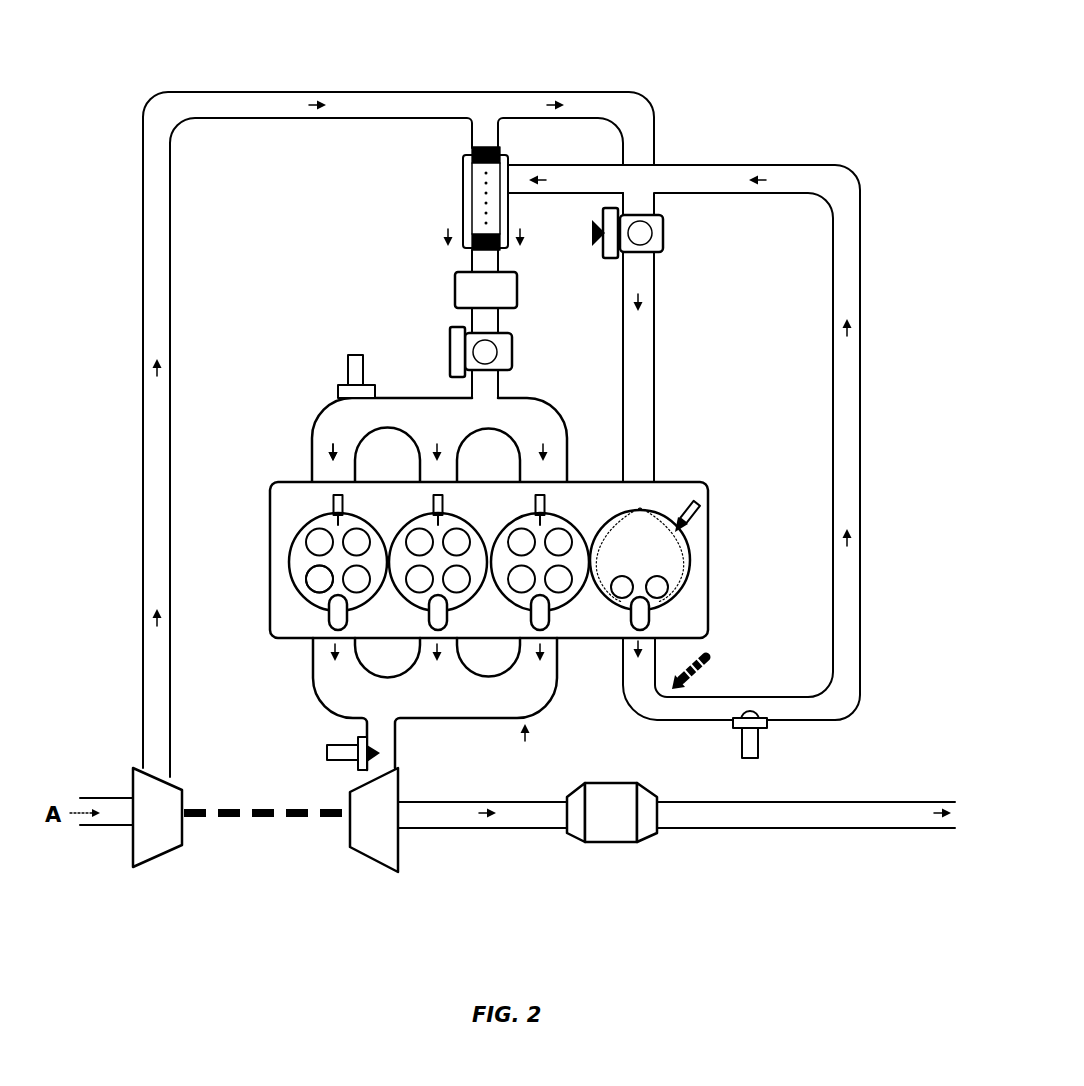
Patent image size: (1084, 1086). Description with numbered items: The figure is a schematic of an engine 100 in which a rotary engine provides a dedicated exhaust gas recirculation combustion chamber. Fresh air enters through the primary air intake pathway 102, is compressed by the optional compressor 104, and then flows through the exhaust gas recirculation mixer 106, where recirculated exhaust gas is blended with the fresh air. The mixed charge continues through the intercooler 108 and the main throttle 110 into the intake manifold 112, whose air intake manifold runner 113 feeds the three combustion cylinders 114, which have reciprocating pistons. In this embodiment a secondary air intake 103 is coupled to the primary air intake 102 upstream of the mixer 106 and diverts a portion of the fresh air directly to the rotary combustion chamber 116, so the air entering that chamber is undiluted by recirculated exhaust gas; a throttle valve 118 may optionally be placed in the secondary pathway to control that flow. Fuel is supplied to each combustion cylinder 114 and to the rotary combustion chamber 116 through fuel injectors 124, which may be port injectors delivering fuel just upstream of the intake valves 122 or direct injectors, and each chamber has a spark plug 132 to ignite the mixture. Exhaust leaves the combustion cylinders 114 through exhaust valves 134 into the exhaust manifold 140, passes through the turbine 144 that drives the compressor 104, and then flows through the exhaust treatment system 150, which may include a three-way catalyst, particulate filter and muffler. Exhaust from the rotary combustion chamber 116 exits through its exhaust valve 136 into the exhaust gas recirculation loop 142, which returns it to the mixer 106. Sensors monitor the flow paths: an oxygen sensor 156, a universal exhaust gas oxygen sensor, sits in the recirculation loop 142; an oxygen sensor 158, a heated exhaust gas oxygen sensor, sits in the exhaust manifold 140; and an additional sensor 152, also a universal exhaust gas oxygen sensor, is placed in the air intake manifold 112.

The engine 100 is at (231, 66).
The air intake pathway 102 is at (87, 790).
The secondary air intake 103 is at (577, 90).
The compressor 104 is at (160, 850).
The mixer 106 is at (462, 182).
The intercooler 108 is at (455, 286).
The main throttle 110 is at (440, 350).
The intake manifold 112 is at (333, 415).
The air intake manifold runner 113 is at (333, 452).
The combustion cylinders 114 is at (310, 537).
The rotary combustion chamber 116 is at (680, 537).
The throttle valve 118 is at (650, 243).
The intake valve 122 is at (318, 540).
The fuel injectors 124 is at (335, 612).
The spark plug 132 is at (658, 506).
The exhaust valves 134 is at (322, 578).
The exhaust valve 136 is at (658, 590).
The exhaust manifold 140 is at (545, 798).
The exhaust gas recirculation loop 142 is at (758, 690).
The turbine 144 is at (378, 852).
The exhaust treatment system 150 is at (603, 832).
The sensor 152 is at (360, 356).
The oxygen sensor 156 is at (748, 760).
The oxygen sensor 158 is at (327, 752).